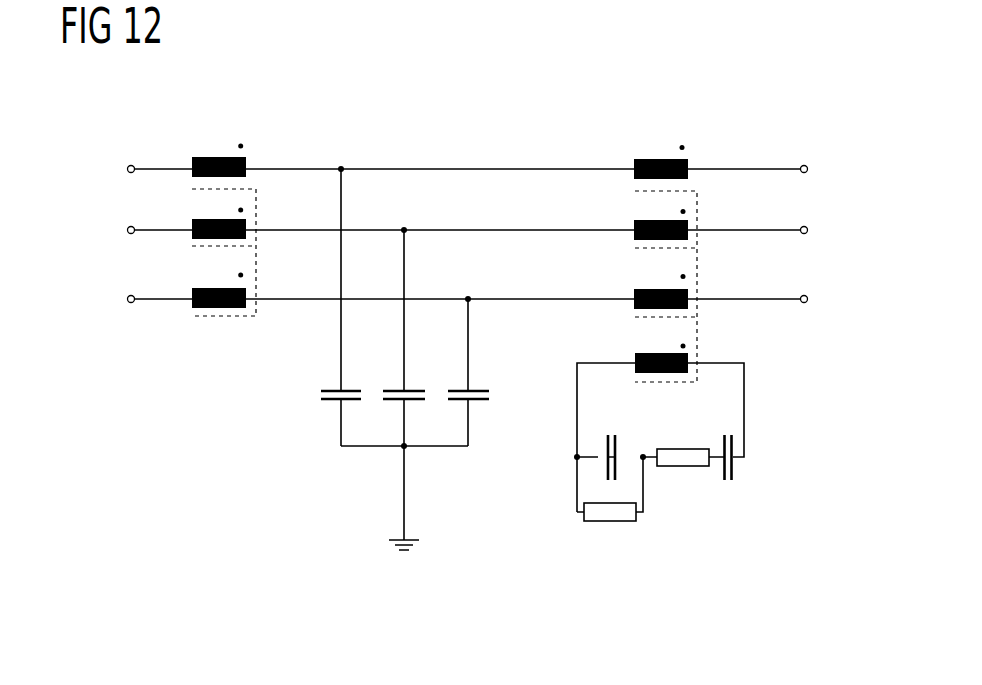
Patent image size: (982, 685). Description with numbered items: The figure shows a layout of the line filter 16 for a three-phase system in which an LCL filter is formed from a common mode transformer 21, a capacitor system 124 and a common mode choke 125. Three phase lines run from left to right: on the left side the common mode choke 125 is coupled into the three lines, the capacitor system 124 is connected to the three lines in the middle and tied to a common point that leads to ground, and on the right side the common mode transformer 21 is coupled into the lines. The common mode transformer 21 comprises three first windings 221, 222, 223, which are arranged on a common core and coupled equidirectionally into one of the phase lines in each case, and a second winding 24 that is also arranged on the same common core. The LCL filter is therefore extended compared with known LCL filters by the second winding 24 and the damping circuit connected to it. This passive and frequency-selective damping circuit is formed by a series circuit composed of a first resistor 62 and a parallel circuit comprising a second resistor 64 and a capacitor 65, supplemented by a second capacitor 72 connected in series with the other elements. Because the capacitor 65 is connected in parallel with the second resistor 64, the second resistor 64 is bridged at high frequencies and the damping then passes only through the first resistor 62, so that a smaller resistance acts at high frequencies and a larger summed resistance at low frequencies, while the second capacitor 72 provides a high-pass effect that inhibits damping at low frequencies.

The line filter 16 is at (517, 167).
The common mode transformer 21 is at (669, 319).
The second winding 24 is at (688, 362).
The first resistor 62 is at (666, 467).
The second resistor 64 is at (600, 523).
The capacitor 65 is at (615, 442).
The second capacitor 72 is at (733, 467).
The capacitor system 124 is at (424, 197).
The common mode choke 125 is at (273, 132).
The first winding 221 is at (645, 158).
The first winding 222 is at (633, 225).
The first winding 223 is at (633, 295).